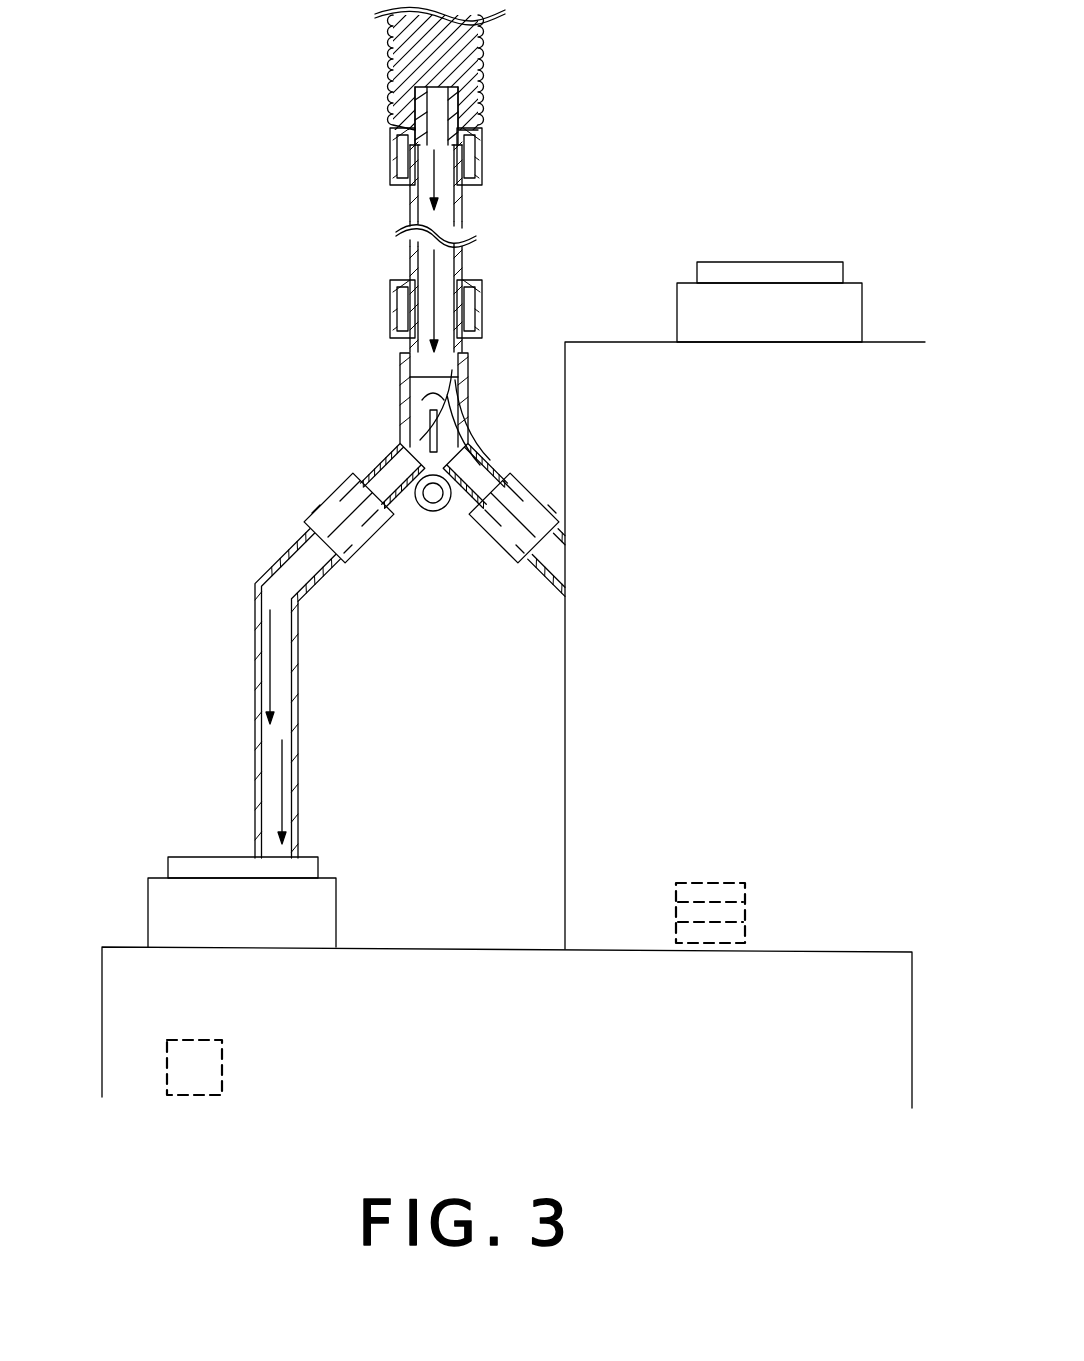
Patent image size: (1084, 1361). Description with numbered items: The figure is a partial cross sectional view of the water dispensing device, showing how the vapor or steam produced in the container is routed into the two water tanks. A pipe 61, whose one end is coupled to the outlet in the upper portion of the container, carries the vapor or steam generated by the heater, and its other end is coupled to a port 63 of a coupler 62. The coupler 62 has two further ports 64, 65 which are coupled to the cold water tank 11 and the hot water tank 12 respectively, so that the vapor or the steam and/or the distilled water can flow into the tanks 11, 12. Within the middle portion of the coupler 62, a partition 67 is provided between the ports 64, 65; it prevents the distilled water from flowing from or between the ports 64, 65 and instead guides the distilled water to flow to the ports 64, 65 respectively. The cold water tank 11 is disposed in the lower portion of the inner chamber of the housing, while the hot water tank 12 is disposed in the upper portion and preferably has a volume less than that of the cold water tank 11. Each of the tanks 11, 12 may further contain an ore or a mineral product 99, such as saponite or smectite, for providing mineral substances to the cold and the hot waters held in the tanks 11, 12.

The cold water tank 11 is at (496, 1010).
The hot water tank 12 is at (707, 453).
The pipe 61 is at (442, 65).
The coupler 62 is at (468, 423).
The port 63 is at (400, 377).
The port 64 is at (388, 512).
The port 65 is at (462, 498).
The partition 67 is at (430, 437).
The mineral product 99 is at (740, 910).